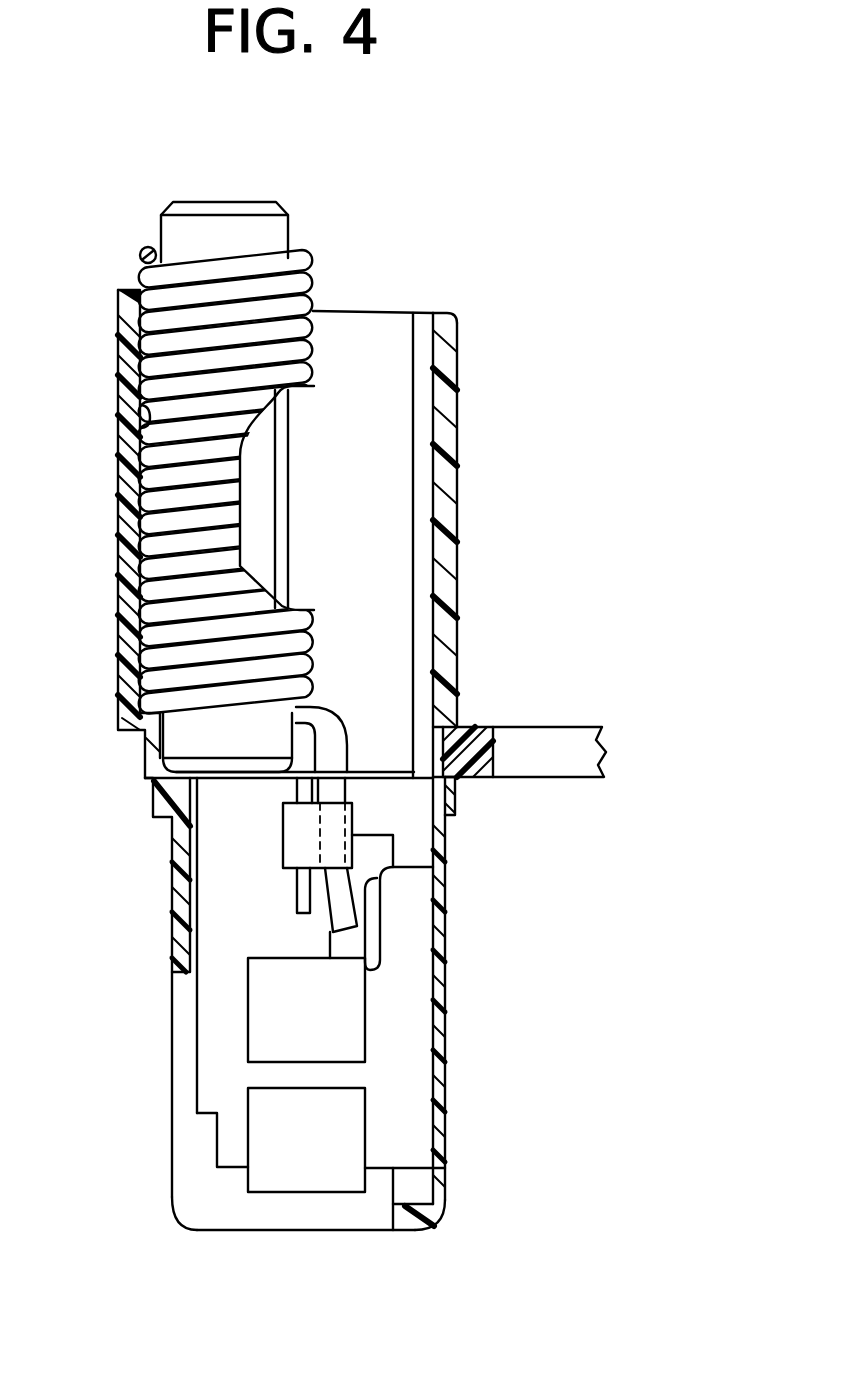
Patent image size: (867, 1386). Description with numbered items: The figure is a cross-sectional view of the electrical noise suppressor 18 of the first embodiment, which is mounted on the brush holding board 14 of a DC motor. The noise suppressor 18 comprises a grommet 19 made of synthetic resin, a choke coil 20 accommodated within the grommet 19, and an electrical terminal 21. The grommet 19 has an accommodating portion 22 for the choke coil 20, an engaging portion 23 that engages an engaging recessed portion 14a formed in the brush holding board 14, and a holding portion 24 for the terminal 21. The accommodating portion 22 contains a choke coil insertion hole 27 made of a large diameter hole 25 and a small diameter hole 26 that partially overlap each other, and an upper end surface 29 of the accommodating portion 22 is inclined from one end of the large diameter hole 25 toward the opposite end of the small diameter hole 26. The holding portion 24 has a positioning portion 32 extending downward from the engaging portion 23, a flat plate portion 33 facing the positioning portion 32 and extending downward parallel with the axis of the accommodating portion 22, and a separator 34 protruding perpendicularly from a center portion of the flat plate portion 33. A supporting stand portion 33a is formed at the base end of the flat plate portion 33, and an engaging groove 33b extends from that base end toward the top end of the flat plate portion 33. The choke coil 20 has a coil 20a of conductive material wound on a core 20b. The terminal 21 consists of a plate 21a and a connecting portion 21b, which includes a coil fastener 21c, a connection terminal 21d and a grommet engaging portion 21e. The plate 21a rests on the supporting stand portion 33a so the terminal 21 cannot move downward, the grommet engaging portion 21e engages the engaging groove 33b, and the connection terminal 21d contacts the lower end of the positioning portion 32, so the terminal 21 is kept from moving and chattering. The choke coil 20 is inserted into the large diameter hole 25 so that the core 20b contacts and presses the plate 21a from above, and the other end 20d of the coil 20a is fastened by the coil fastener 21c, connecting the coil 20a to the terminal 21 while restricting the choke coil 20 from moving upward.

The brush holding board 14 is at (480, 775).
The engaging recessed portion 14a is at (443, 778).
The electrical noise suppressor 18 is at (498, 248).
The grommet 19 is at (118, 305).
The choke coil 20 is at (142, 215).
The coil 20a is at (310, 266).
The core 20b is at (235, 225).
The other end of the coil 20d is at (333, 783).
The electrical terminal 21 is at (190, 992).
The plate 21a is at (222, 780).
The connecting portion 21b is at (213, 1080).
The coil fastener 21c is at (288, 857).
The connection terminal 21d is at (360, 1022).
The grommet engaging portion 21e is at (413, 942).
The accommodating portion 22 is at (457, 511).
The engaging portion 23 is at (488, 728).
The holding portion 24 is at (290, 1232).
The large diameter hole 25 is at (140, 420).
The small diameter hole 26 is at (363, 335).
The choke coil insertion hole 27 is at (372, 496).
The upper end surface 29 is at (405, 316).
The positioning portion 32 is at (177, 953).
The flat plate portion 33 is at (446, 1020).
The supporting stand portion 33a is at (367, 790).
The engaging groove 33b is at (424, 1180).
The separator 34 is at (188, 1197).